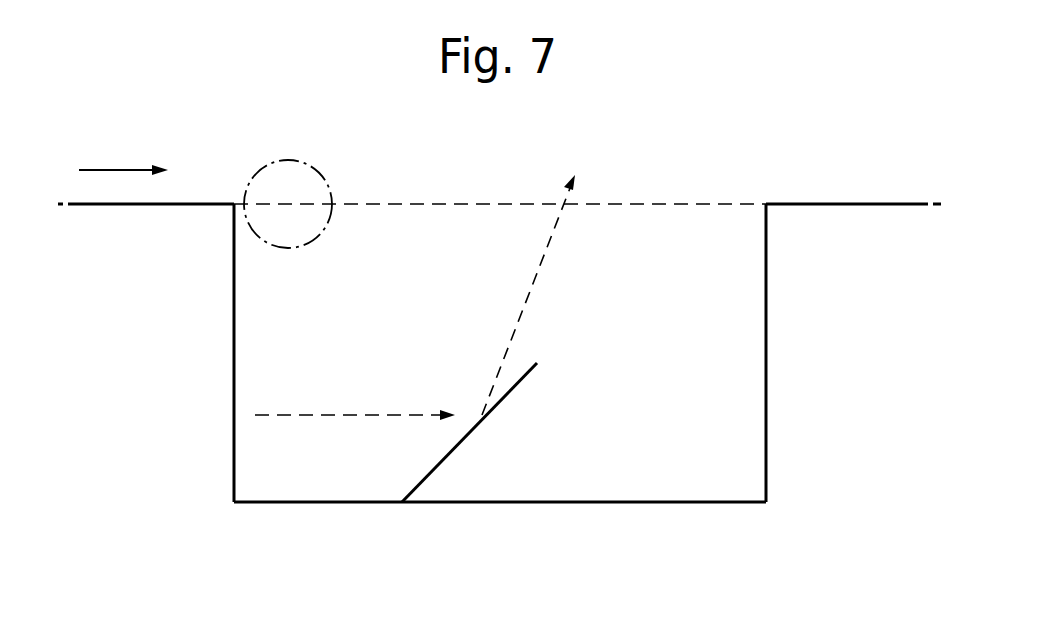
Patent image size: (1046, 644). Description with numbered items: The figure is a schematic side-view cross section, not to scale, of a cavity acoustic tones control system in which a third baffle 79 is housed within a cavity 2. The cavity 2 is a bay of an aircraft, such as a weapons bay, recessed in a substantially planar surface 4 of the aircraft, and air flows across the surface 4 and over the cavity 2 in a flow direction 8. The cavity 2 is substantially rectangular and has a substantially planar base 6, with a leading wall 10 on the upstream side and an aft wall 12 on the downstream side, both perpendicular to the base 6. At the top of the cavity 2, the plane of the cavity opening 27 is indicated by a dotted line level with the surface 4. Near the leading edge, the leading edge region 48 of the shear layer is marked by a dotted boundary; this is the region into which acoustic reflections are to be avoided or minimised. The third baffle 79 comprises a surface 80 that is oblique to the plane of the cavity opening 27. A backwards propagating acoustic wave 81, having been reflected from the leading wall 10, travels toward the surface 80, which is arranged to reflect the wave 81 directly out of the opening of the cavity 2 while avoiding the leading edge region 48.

The cavity 2 is at (658, 251).
The surface 4 is at (115, 206).
The base 6 is at (691, 503).
The flow direction 8 is at (110, 168).
The leading wall 10 is at (233, 368).
The aft wall 12 is at (767, 368).
The plane of the cavity opening 27 is at (440, 203).
The leading edge region 48 is at (283, 248).
The third baffle 79 is at (528, 402).
The surface 80 is at (425, 478).
The backwards propagating acoustic wave 81 is at (526, 291).